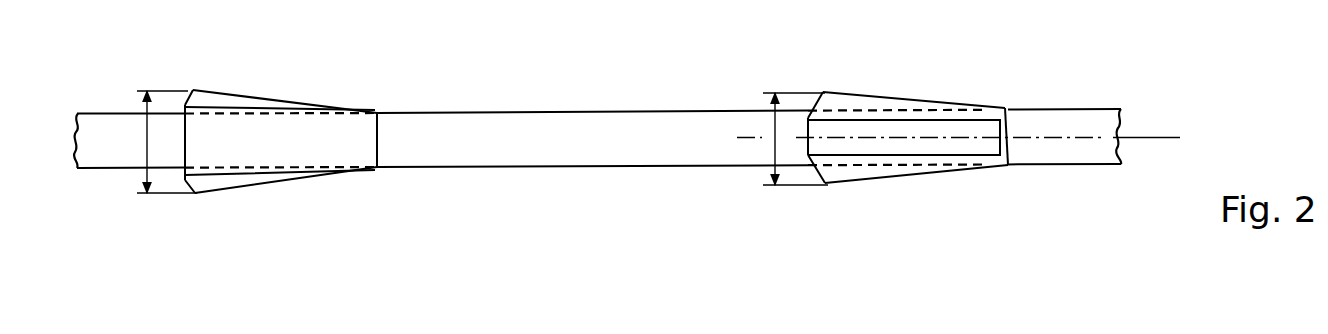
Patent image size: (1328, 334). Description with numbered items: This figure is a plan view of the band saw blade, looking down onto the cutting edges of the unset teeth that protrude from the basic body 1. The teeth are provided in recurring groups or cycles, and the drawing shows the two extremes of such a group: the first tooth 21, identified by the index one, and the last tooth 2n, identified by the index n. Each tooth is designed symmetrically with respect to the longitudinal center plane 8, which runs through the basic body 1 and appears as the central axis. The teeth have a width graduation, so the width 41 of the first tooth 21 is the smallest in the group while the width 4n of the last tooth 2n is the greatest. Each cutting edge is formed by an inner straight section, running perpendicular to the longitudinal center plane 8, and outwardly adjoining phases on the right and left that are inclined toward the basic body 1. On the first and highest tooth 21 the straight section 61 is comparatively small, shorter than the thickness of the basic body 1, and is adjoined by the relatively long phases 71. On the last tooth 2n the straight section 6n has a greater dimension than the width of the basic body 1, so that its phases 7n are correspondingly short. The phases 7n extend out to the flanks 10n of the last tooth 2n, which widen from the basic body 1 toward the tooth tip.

The basic body 1 is at (623, 127).
The longitudinal center plane 8 is at (1145, 137).
The last tooth 2n is at (273, 147).
The straight section of last tooth 6n is at (183, 154).
The phase of last tooth 7n is at (188, 98).
The flank of last tooth 10n is at (193, 90).
The width of last tooth 4n is at (167, 142).
The first tooth 21 is at (962, 145).
The straight section of first tooth 61 is at (808, 147).
The phase of first tooth 71 is at (815, 100).
The width of first tooth 41 is at (795, 139).